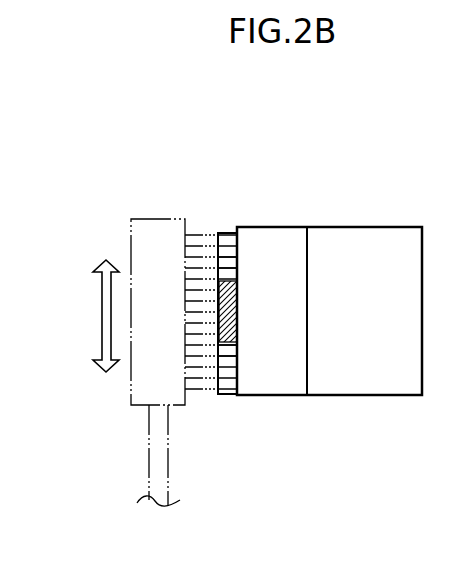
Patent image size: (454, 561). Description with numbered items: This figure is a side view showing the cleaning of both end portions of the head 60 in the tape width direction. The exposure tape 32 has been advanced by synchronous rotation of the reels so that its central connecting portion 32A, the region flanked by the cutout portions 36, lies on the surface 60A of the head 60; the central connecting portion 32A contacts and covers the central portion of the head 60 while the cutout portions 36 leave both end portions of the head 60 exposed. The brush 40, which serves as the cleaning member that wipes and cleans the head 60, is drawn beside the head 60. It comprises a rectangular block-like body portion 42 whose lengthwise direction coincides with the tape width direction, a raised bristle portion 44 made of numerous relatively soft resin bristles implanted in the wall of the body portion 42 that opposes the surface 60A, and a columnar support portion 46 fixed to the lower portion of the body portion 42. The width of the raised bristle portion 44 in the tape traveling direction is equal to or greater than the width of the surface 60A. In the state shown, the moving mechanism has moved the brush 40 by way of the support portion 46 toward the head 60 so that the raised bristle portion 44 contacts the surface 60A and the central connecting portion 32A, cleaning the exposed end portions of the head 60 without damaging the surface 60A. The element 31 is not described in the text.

The brush 40 is at (143, 215).
The body portion 42 is at (130, 235).
The raised bristle portion 44 is at (197, 232).
The support portion 46 is at (148, 477).
The head 60 is at (376, 222).
The surface of the head 60A is at (236, 229).
The cutout portions 36 is at (230, 262).
The exposure tape 32 is at (226, 398).
The central connecting portion 32A is at (238, 310).
The base portion 31 is at (216, 400).